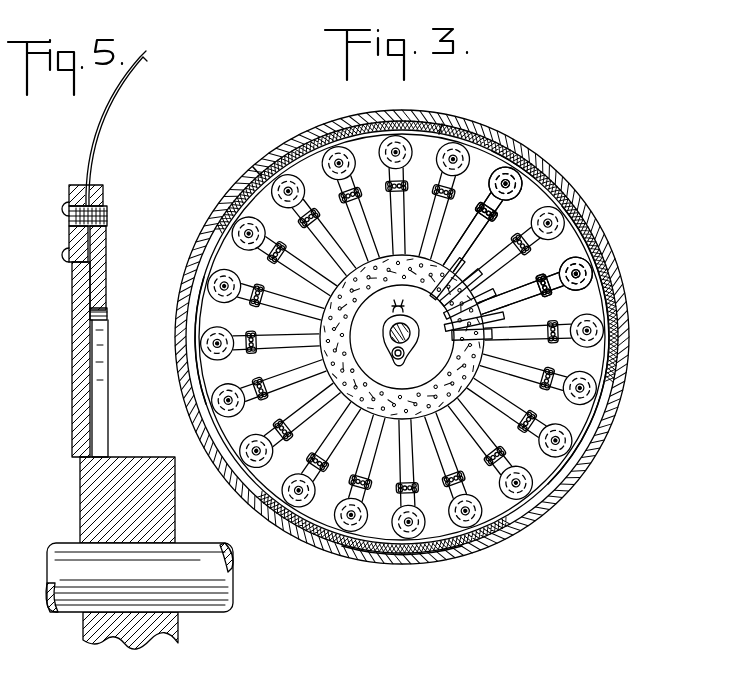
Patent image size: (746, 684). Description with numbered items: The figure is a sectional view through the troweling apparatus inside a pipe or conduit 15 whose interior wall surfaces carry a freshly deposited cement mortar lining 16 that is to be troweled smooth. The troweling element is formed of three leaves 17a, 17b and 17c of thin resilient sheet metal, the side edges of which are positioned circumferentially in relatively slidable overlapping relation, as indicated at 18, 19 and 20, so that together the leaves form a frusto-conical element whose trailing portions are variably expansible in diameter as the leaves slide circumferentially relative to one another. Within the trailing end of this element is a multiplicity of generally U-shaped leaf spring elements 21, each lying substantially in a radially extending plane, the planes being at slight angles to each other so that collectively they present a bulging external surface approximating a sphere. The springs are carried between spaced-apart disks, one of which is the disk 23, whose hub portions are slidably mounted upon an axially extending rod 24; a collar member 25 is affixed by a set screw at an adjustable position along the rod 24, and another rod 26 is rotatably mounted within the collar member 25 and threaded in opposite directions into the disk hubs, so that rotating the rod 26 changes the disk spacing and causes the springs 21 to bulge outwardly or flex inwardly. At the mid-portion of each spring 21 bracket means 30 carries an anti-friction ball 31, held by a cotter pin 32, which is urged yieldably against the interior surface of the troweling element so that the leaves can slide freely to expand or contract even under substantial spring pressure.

In FIG. 3, the pipe or conduit 15 is at (402, 337).
In FIG. 3, the cement mortar lining 16 is at (415, 336).
In FIG. 3, the leaf 17a is at (521, 144).
In FIG. 3, the leaf 17b is at (589, 353).
In FIG. 3, the leaf 17c is at (173, 340).
In FIG. 3, the overlapping relation 18 is at (425, 337).
In FIG. 3, the overlapping relation 19 is at (402, 572).
In FIG. 3, the overlapping relation 20 is at (421, 337).
In FIG. 3, the leaf spring element 21 is at (392, 365).
In FIG. 5, the leaf spring element 21 is at (110, 104).
In FIG. 3, the disk 23 is at (469, 287).
In FIG. 5, the disk 23 is at (76, 378).
In FIG. 3, the rod 24 is at (411, 332).
In FIG. 5, the rod 24 is at (200, 548).
In FIG. 3, the collar member 25 is at (391, 332).
In FIG. 3, the rod 26 is at (405, 356).
In FIG. 3, the bracket means 30 is at (533, 242).
In FIG. 3, the ball 31 is at (465, 122).
In FIG. 3, the cotter pin 32 is at (541, 239).